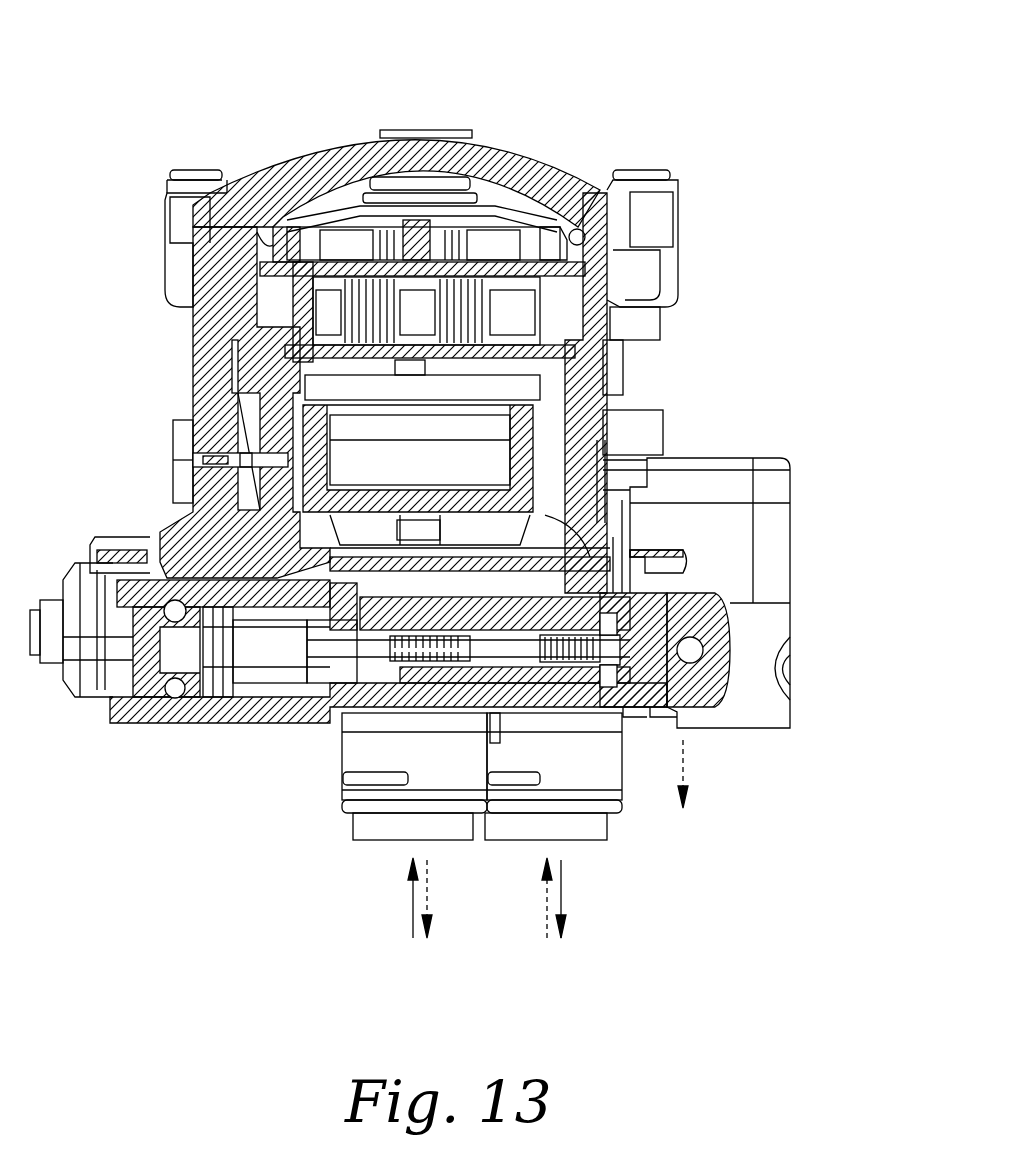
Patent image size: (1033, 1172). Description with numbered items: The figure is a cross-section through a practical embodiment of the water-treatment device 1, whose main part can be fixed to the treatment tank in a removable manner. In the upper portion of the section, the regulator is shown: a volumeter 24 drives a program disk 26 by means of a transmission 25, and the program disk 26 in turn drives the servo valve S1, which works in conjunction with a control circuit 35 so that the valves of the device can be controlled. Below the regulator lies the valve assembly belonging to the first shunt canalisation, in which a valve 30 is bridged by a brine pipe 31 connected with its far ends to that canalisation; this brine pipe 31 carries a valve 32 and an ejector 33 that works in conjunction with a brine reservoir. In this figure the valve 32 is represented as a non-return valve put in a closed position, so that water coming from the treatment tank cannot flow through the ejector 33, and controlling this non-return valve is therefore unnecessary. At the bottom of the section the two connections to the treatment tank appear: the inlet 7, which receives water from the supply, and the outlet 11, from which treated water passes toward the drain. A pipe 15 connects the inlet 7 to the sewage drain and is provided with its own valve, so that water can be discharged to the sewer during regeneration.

The device 1 is at (684, 86).
The program disk 26 is at (490, 215).
The servo valve S1 is at (560, 230).
The transmission 25 is at (612, 290).
The volumeter 24 is at (490, 450).
The control circuit 35 is at (108, 720).
The valve 30 is at (335, 715).
The brine pipe 31 is at (365, 695).
The valve 32 is at (427, 677).
The ejector 33 is at (410, 663).
The outlet 11 is at (423, 780).
The inlet 7 is at (597, 777).
The pipe 15 is at (668, 748).